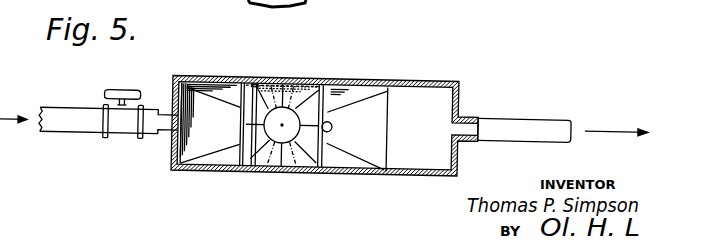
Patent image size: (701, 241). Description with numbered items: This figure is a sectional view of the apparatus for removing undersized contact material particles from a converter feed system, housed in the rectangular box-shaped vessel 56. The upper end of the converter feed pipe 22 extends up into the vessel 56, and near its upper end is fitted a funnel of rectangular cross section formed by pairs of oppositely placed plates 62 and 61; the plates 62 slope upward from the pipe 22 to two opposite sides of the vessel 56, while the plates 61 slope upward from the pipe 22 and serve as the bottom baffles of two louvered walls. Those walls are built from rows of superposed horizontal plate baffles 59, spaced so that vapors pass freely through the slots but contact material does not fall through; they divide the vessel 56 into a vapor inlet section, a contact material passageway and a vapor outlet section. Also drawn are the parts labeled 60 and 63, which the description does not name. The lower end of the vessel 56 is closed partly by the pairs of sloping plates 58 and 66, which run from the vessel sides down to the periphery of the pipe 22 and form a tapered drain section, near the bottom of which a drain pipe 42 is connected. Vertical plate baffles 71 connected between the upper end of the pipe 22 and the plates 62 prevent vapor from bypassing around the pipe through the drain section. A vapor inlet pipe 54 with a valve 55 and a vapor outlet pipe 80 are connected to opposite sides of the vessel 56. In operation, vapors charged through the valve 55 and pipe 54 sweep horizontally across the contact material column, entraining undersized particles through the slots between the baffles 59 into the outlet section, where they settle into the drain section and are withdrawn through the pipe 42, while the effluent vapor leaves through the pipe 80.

The converter feed pipe 22 is at (274, 143).
The drain pipe 42 is at (330, 168).
The vapor inlet pipe 54 is at (152, 113).
The valve 55 is at (103, 96).
The vessel 56 is at (415, 77).
The plates 58 is at (186, 145).
The plate baffles 59 is at (262, 80).
The ball chamber 60 is at (333, 79).
The plates 61 is at (236, 170).
The plates 62 is at (302, 79).
The shaded zone 63 is at (291, 98).
The plates 66 is at (237, 80).
The vertical plate baffles 71 is at (300, 78).
The vapor outlet pipe 80 is at (523, 115).